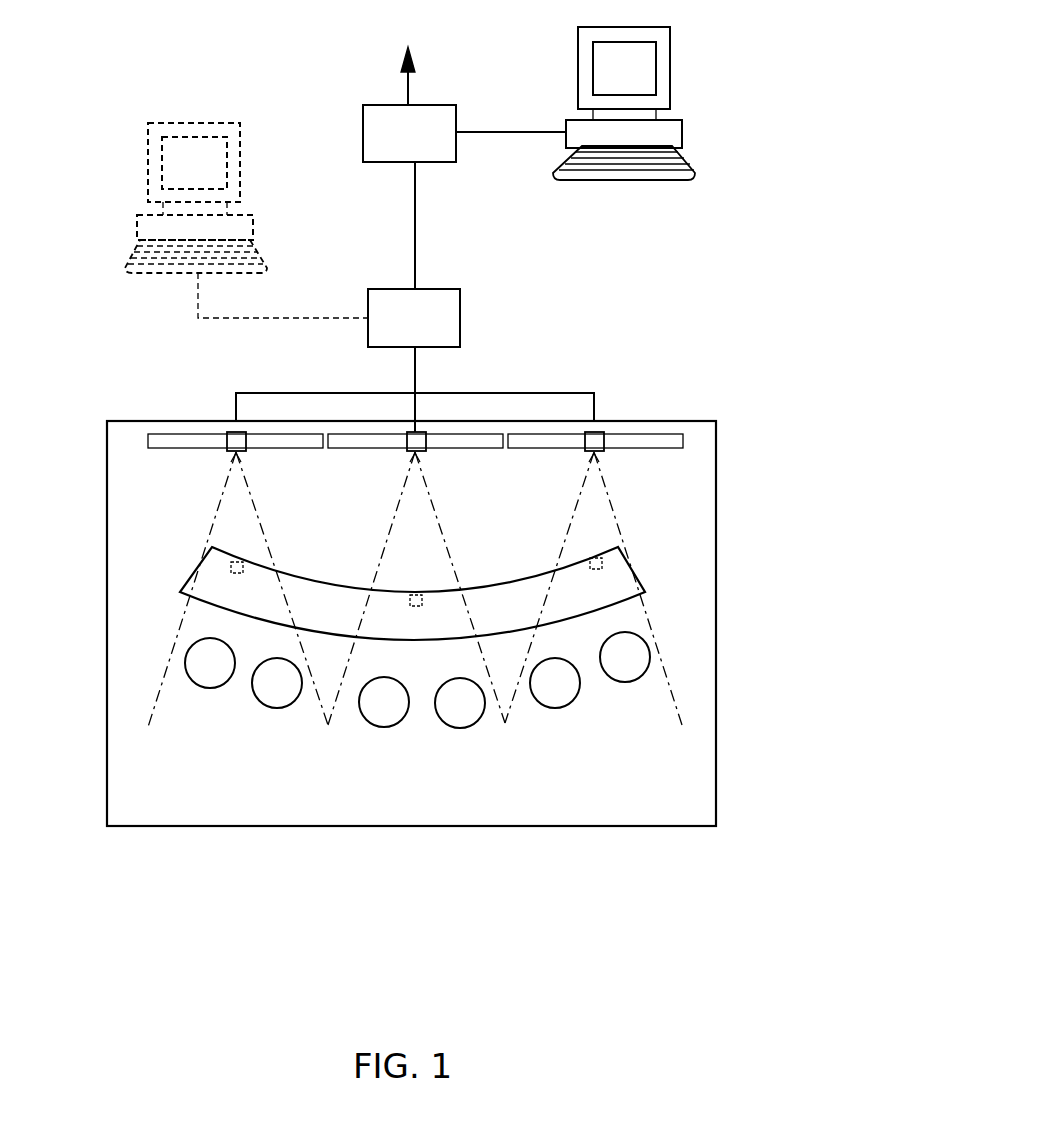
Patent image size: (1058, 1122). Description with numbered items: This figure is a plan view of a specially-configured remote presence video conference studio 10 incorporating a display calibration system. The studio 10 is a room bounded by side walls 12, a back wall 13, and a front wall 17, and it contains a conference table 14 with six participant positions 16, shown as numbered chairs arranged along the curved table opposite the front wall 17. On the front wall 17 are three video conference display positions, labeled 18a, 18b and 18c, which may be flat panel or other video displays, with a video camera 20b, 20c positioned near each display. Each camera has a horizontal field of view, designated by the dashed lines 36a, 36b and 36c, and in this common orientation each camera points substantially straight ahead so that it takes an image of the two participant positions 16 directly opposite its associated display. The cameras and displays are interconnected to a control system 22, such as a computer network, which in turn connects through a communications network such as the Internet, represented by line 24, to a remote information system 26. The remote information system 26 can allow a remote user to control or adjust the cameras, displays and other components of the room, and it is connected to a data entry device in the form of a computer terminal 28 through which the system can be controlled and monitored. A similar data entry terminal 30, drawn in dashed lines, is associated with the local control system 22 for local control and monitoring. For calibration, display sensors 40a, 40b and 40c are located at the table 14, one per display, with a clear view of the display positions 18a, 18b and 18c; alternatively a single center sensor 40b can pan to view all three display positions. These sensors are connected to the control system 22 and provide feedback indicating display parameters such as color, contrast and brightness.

The video conference studio 10 is at (739, 851).
The side walls 12 is at (107, 518).
The back wall 13 is at (290, 826).
The conference table 14 is at (512, 622).
The participant positions 16 is at (380, 727).
The front wall 17 is at (697, 421).
The video conference display 18a is at (195, 446).
The video conference display 18b is at (369, 440).
The video conference display 18c is at (622, 443).
The video camera 20b is at (230, 437).
The video camera 20c is at (604, 440).
The control system 22 is at (427, 330).
The communications network 24 is at (415, 247).
The remote information system 26 is at (423, 147).
The computer terminal 28 is at (650, 80).
The data entry terminal 30 is at (150, 173).
The horizontal camera view range 36a is at (163, 678).
The horizontal camera view range 36b is at (442, 532).
The horizontal camera view range 36c is at (665, 668).
The display sensor 40a is at (244, 565).
The display sensor 40b is at (410, 598).
The display sensor 40c is at (590, 563).